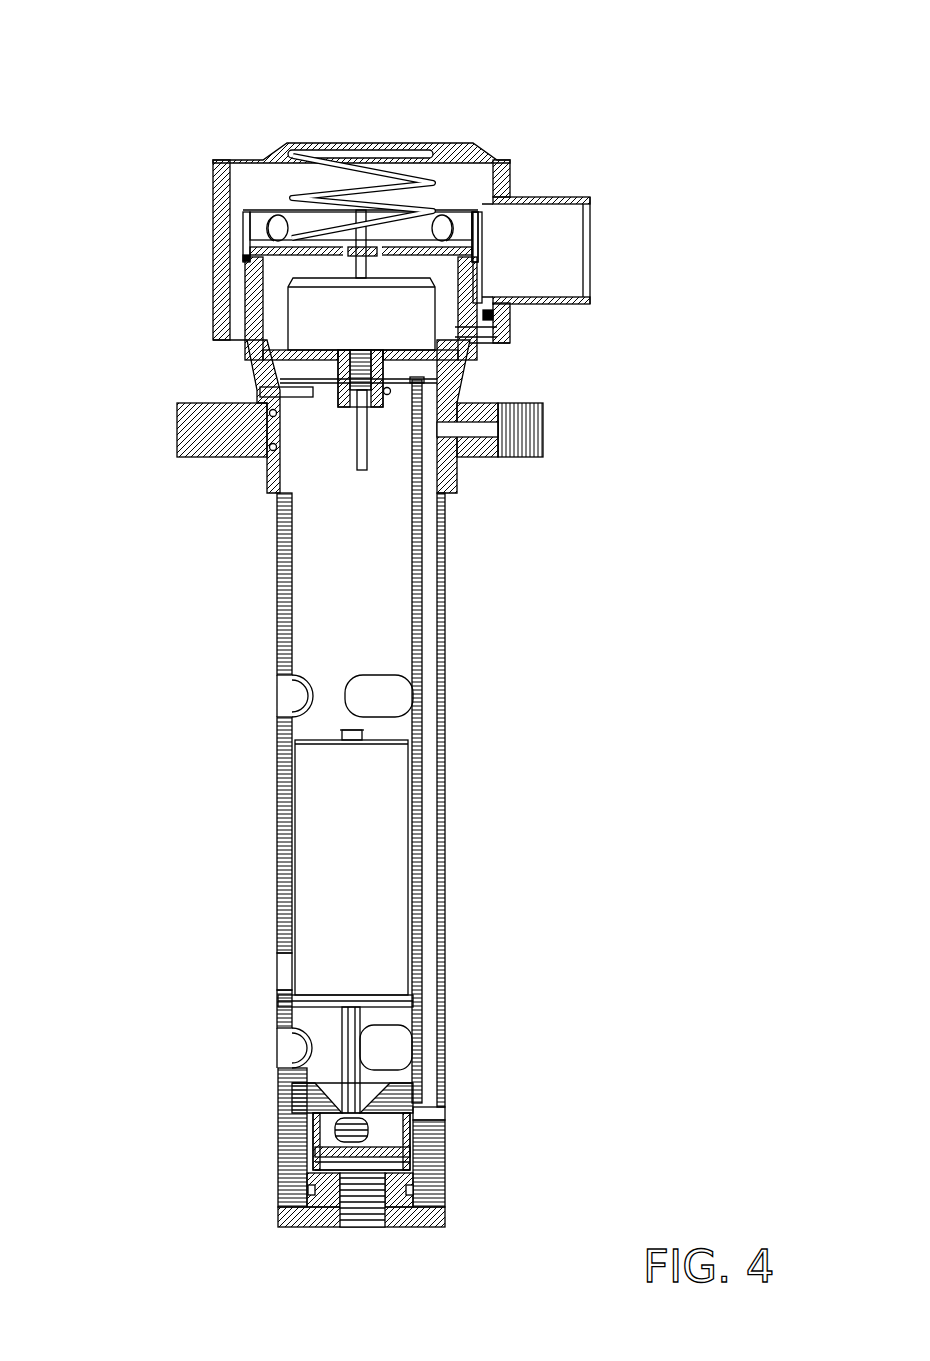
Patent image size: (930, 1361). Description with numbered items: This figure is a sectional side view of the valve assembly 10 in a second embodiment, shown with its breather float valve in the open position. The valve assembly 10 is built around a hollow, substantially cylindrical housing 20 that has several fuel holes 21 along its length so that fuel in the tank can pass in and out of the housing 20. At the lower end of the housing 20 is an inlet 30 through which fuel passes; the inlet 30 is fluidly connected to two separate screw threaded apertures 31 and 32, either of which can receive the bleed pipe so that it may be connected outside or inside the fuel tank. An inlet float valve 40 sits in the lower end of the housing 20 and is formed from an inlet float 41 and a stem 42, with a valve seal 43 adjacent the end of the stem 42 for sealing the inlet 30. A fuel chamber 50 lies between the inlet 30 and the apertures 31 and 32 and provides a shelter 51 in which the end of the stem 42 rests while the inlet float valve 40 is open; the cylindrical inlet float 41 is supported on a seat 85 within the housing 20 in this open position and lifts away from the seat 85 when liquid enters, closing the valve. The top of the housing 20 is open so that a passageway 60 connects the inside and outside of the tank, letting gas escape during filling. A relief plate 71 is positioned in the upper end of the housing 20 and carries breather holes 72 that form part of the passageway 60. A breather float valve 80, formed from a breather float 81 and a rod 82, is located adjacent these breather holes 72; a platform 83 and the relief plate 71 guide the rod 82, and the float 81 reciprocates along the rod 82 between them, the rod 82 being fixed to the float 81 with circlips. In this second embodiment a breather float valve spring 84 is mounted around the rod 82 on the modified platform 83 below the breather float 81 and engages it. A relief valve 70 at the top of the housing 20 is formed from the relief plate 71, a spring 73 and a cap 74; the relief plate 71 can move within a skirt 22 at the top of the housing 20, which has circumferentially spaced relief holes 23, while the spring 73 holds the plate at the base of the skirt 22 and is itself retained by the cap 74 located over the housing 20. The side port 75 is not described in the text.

The valve assembly 10 is at (722, 118).
The housing 20 is at (258, 520).
The fuel holes 21 is at (280, 688).
The skirt 22 is at (460, 192).
The relief holes 23 is at (272, 228).
The inlet 30 is at (420, 1108).
The screw threaded aperture 31 is at (543, 423).
The screw threaded aperture 32 is at (362, 1210).
The inlet float valve 40 is at (345, 894).
The inlet float 41 is at (330, 800).
The stem 42 is at (423, 1062).
The valve seal 43 is at (340, 1137).
The fuel chamber 50 is at (420, 1127).
The shelter 51 is at (417, 1167).
The passageway 60 is at (357, 540).
The relief valve 70 is at (296, 178).
The relief plate 71 is at (485, 248).
The breather holes 72 is at (337, 250).
The spring 73 is at (375, 168).
The cap 74 is at (215, 200).
The side port 75 is at (560, 232).
The breather float valve 80 is at (280, 308).
The breather float 81 is at (407, 312).
The rod 82 is at (357, 437).
The platform 83 is at (470, 355).
The breather float valve spring 84 is at (340, 360).
The seat 85 is at (292, 1002).